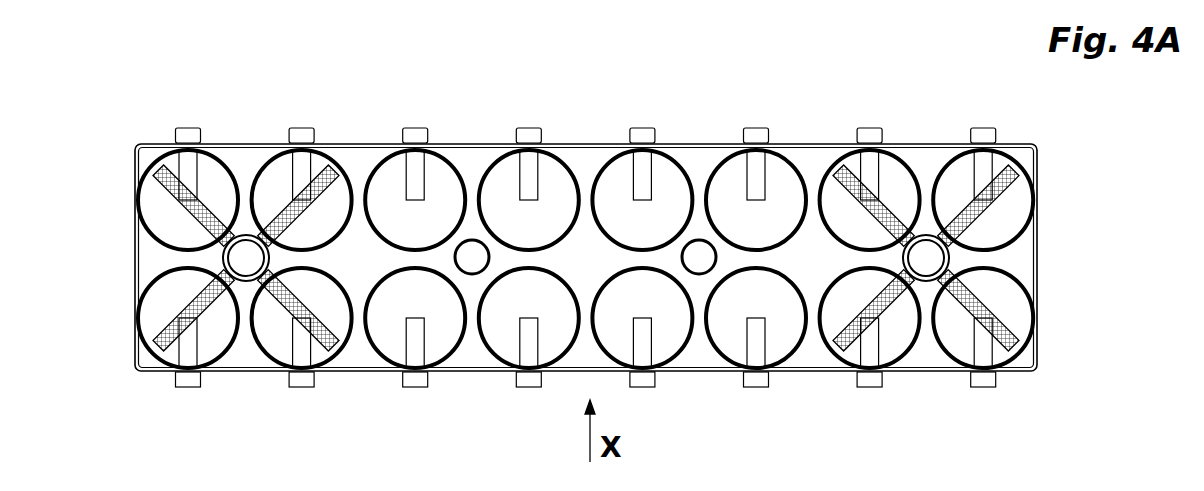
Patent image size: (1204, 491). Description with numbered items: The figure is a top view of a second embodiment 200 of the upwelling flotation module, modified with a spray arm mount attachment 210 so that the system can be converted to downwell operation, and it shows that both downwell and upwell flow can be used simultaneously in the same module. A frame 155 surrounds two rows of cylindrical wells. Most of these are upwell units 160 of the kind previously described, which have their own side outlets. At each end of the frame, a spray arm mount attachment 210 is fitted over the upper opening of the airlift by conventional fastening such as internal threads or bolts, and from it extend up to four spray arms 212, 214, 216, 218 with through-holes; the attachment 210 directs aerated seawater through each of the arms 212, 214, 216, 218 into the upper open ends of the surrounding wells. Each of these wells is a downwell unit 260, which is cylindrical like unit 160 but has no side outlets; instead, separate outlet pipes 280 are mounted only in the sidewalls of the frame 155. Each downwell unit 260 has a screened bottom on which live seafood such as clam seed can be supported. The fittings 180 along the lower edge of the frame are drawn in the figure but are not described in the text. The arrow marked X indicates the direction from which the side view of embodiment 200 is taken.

The second embodiment 200 is at (135, 93).
The frame 155 is at (1037, 151).
The unit 160 is at (505, 271).
The bottom terminal tabs 180 is at (540, 387).
The outlet pipes 280 is at (294, 131).
The spray arm mount attachment 210 is at (248, 258).
The spray arm 212 is at (157, 357).
The spray arm 214 is at (328, 340).
The spray arm 216 is at (187, 206).
The spray arm 218 is at (327, 168).
The downwell unit 260 is at (247, 310).